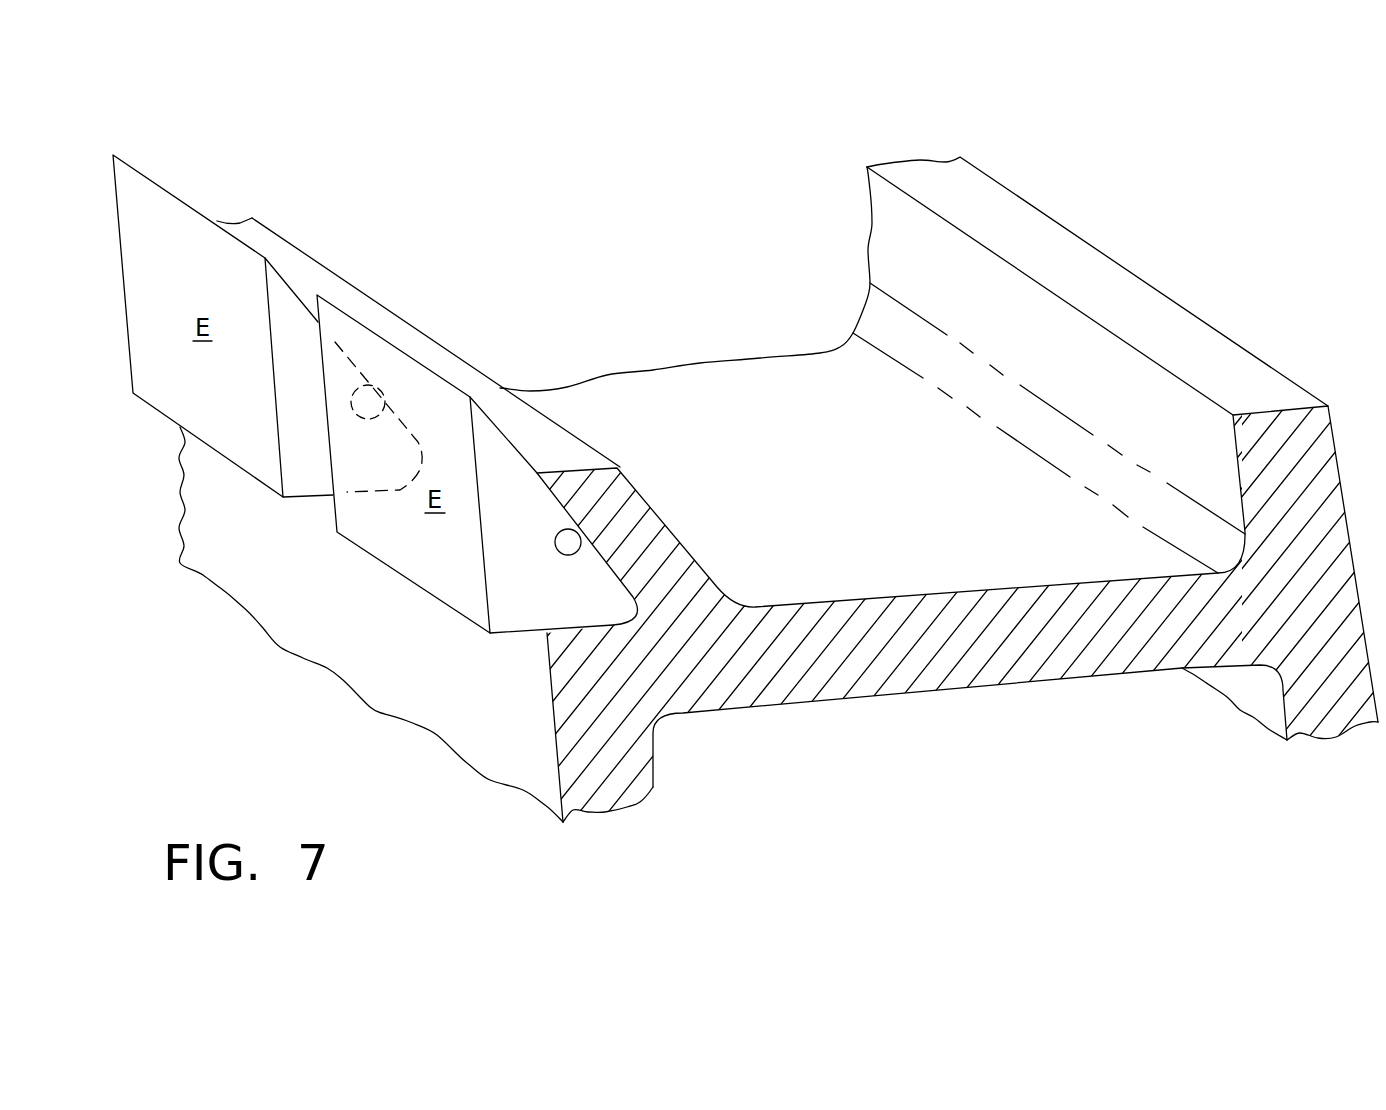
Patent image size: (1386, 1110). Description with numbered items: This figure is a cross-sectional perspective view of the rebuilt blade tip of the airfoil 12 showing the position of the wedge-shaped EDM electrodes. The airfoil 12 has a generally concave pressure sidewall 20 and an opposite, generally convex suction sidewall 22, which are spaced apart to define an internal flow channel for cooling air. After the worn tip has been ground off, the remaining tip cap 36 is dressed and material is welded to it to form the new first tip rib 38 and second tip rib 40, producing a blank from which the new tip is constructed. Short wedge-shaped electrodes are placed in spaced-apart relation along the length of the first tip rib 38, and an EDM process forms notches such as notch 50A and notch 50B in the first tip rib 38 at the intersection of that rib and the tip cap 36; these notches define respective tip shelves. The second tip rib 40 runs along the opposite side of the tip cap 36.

The airfoil 12 is at (709, 117).
The pressure sidewall 20 is at (467, 695).
The suction sidewall 22 is at (1385, 742).
The tip cap 36 is at (933, 667).
The first tip rib 38 is at (298, 265).
The second tip rib 40 is at (1148, 303).
The notch 50A is at (590, 545).
The notch 50B is at (385, 408).